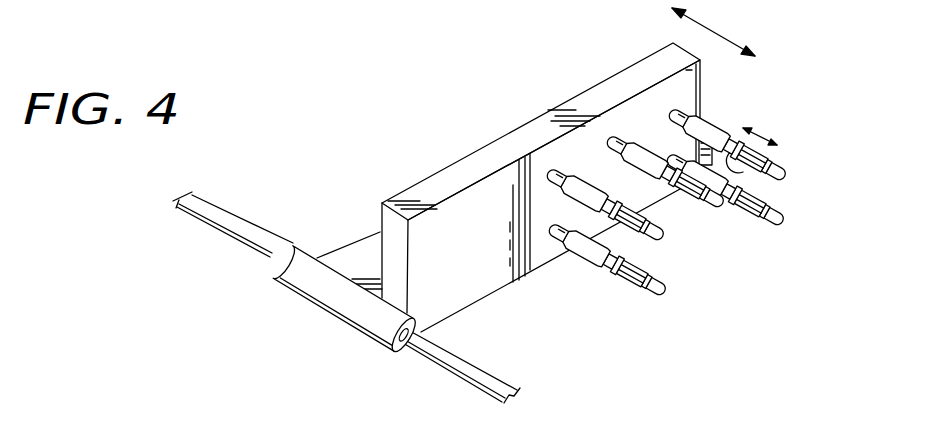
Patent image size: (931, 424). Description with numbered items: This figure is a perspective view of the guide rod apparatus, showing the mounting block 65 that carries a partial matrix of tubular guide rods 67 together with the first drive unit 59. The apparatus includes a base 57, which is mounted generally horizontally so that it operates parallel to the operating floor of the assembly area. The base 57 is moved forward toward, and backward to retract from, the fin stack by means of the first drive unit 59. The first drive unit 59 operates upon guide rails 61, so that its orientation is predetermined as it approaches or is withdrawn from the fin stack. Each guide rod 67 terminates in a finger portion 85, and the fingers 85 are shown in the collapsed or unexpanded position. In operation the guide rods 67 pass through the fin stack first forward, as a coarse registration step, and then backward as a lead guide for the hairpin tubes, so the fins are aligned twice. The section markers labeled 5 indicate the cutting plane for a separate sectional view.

The base 57 is at (363, 238).
The first drive unit 59 is at (317, 306).
The guide rails 61 is at (203, 220).
The mounting block 65 is at (498, 233).
The tubular guide rods 67 is at (712, 116).
The finger portion 85 is at (788, 158).
The section line for FIG. 5 is at (372, 63).